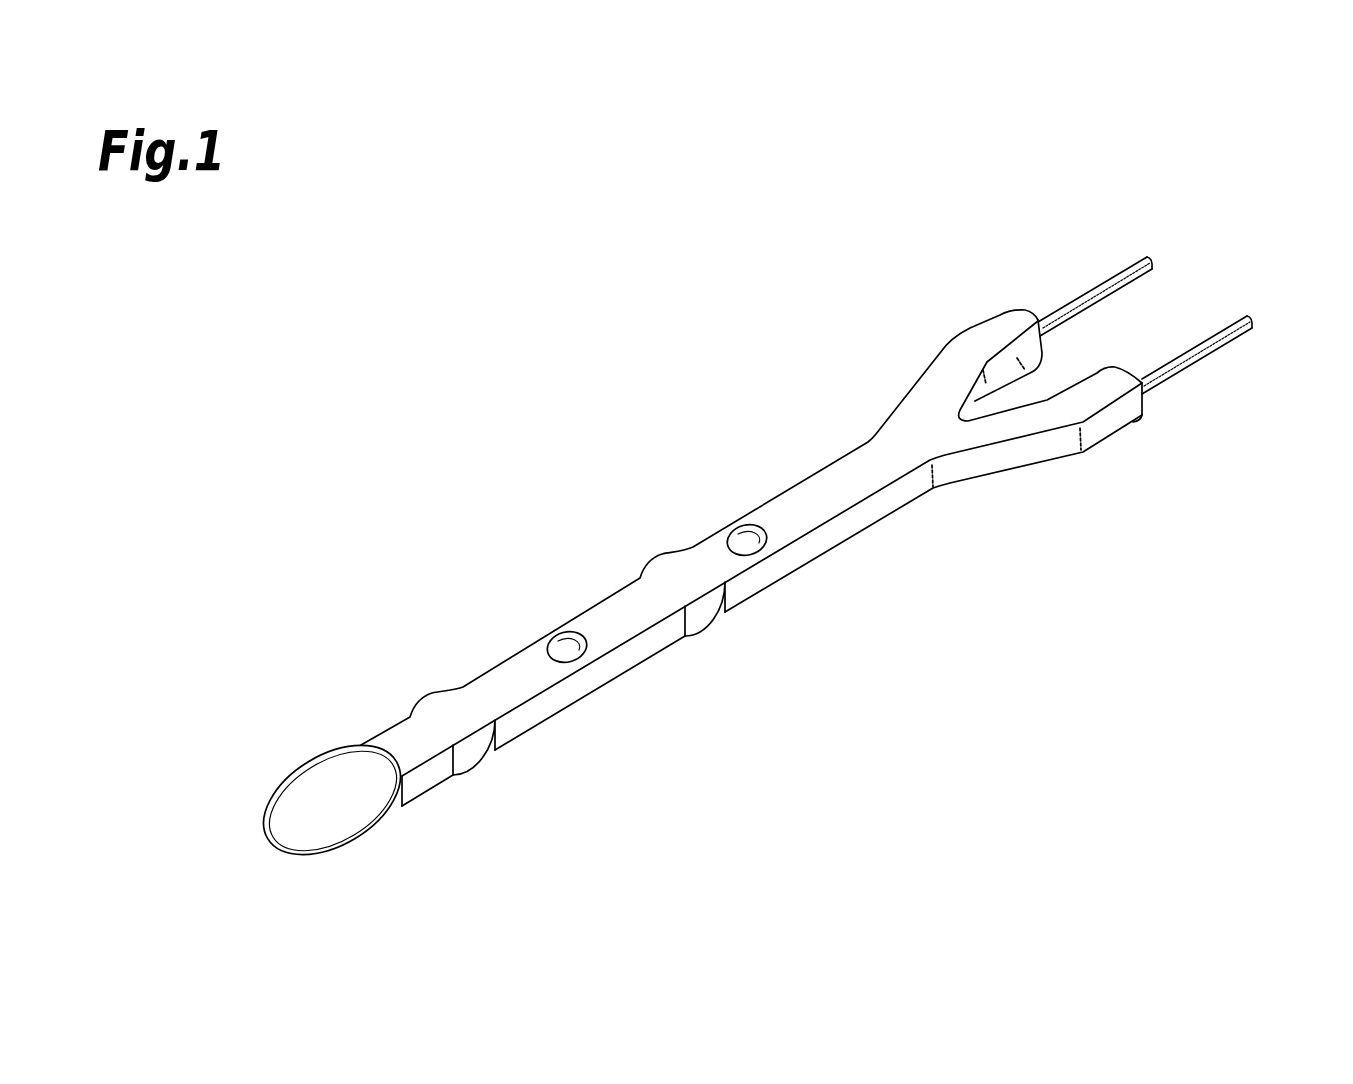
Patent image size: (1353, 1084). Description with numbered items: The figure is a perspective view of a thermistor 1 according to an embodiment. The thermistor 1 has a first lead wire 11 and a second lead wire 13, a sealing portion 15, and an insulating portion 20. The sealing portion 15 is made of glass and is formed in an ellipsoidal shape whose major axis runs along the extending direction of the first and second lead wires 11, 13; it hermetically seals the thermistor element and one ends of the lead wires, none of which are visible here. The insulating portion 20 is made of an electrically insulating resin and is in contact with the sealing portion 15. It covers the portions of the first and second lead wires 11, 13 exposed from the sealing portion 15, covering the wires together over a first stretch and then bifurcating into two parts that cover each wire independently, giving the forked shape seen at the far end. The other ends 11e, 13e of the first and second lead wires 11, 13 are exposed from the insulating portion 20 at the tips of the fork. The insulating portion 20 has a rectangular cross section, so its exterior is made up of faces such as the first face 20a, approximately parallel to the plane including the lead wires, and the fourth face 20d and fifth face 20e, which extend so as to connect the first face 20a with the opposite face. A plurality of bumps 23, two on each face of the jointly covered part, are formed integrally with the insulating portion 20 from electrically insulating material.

The thermistor 1 is at (510, 323).
The first lead wire 11 is at (1097, 278).
The other end of the first lead wire 11e is at (1143, 285).
The second lead wire 13 is at (1202, 366).
The other end of the second lead wire 13e is at (1226, 320).
The sealing portion 15 is at (354, 838).
The insulating portion 20 is at (486, 665).
The first face 20a is at (818, 494).
The fourth face 20d is at (817, 548).
The fifth face 20e is at (1032, 372).
The bumps 23 is at (738, 532).